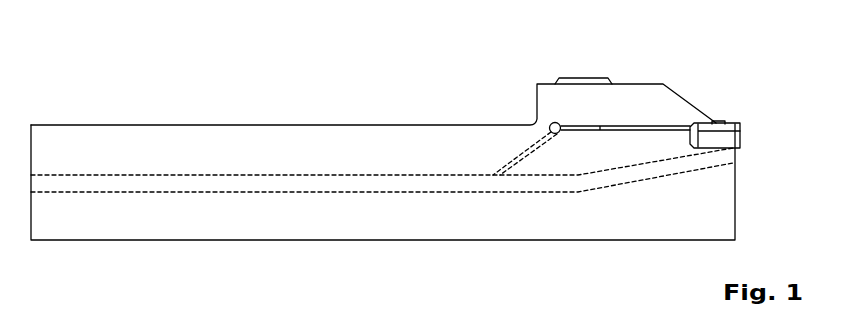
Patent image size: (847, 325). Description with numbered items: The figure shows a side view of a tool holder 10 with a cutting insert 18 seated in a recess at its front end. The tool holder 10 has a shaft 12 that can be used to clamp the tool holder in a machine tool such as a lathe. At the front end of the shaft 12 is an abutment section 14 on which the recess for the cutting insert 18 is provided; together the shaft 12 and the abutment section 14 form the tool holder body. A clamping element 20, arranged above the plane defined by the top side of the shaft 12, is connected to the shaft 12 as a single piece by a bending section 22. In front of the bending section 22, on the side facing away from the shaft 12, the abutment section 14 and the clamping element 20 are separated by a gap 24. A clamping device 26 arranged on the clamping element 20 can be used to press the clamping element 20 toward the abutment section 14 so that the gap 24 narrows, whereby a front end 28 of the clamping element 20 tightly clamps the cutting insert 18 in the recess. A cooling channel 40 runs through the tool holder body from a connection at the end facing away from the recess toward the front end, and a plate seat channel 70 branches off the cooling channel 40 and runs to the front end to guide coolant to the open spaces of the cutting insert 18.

The tool holder 10 is at (452, 100).
The shaft 12 is at (253, 133).
The abutment section 14 is at (708, 208).
The cutting insert 18 is at (740, 132).
The clamping element 20 is at (632, 93).
The bending section 22 is at (545, 122).
The gap 24 is at (663, 128).
The clamping device 26 is at (580, 78).
The front end of the clamping element 28 is at (707, 118).
The cooling channel 40 is at (183, 175).
The plate seat channel 70 is at (630, 177).